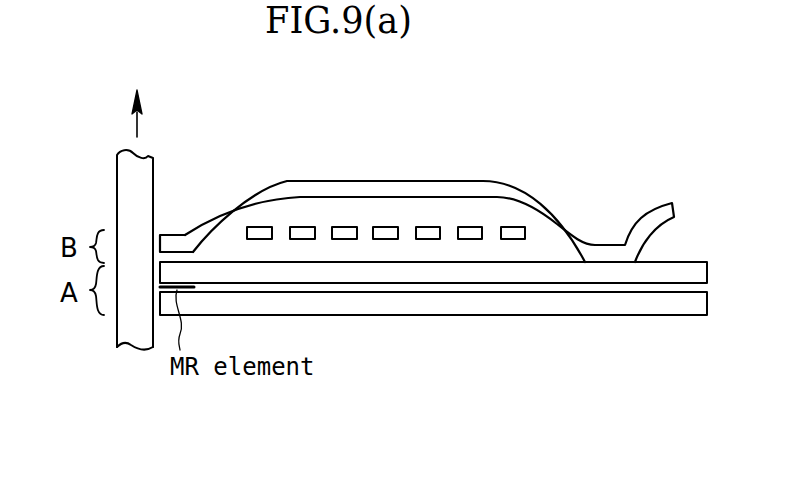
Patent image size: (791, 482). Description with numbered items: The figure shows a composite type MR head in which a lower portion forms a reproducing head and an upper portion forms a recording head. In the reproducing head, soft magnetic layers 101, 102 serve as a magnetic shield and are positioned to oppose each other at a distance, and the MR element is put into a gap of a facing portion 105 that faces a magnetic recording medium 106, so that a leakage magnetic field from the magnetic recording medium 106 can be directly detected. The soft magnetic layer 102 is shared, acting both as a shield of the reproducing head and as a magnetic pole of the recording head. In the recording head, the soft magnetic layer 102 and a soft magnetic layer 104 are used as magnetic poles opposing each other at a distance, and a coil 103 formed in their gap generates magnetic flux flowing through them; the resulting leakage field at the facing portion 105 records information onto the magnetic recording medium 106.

The soft magnetic layer 101 is at (573, 305).
The soft magnetic layer 102 is at (410, 273).
The coil 103 is at (475, 240).
The soft magnetic layer 104 is at (410, 189).
The facing portion 105 is at (177, 223).
The magnetic recording medium 106 is at (130, 352).